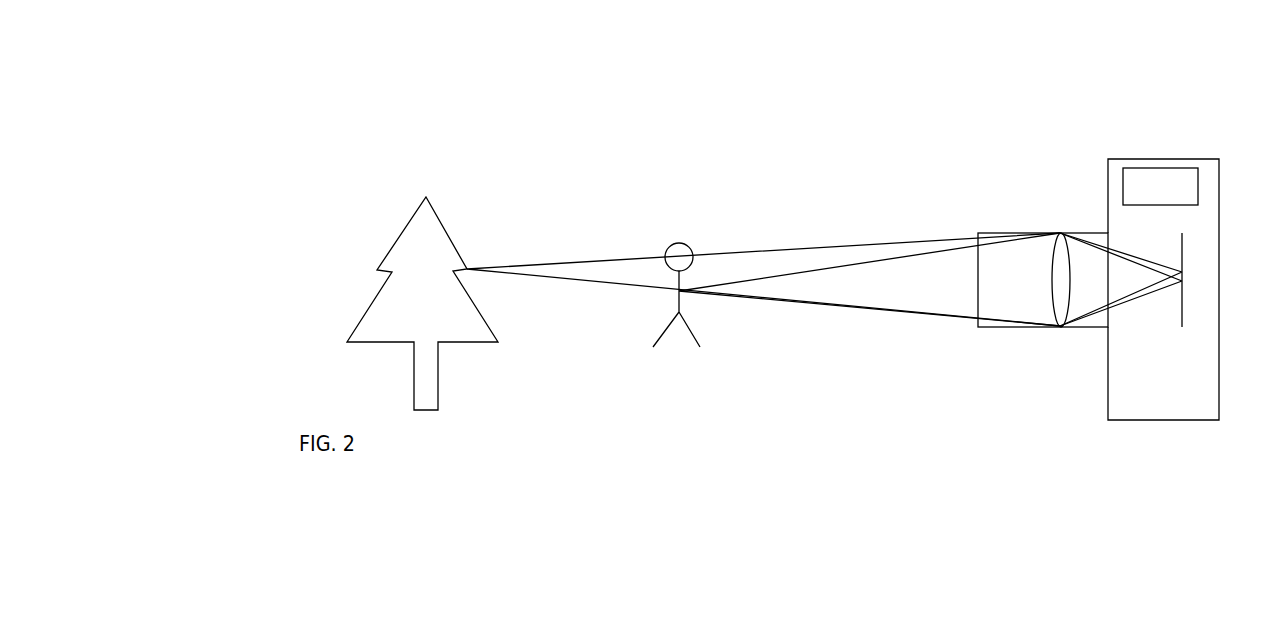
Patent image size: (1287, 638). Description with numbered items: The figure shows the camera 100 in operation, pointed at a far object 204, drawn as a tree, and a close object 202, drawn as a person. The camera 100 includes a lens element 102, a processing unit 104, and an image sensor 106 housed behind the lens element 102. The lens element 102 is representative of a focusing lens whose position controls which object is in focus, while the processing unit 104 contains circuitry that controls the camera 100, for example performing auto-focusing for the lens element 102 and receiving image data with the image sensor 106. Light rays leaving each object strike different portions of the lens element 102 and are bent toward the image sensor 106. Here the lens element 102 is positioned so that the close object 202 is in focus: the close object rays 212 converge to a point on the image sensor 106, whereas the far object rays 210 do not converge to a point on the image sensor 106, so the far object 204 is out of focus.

The camera 100 is at (1078, 146).
The lens element 102 is at (1052, 320).
The processing unit 104 is at (1123, 182).
The image sensor 106 is at (1182, 247).
The close object 202 is at (682, 242).
The far object 204 is at (452, 238).
The far object rays 210 is at (612, 262).
The close object rays 212 is at (848, 267).